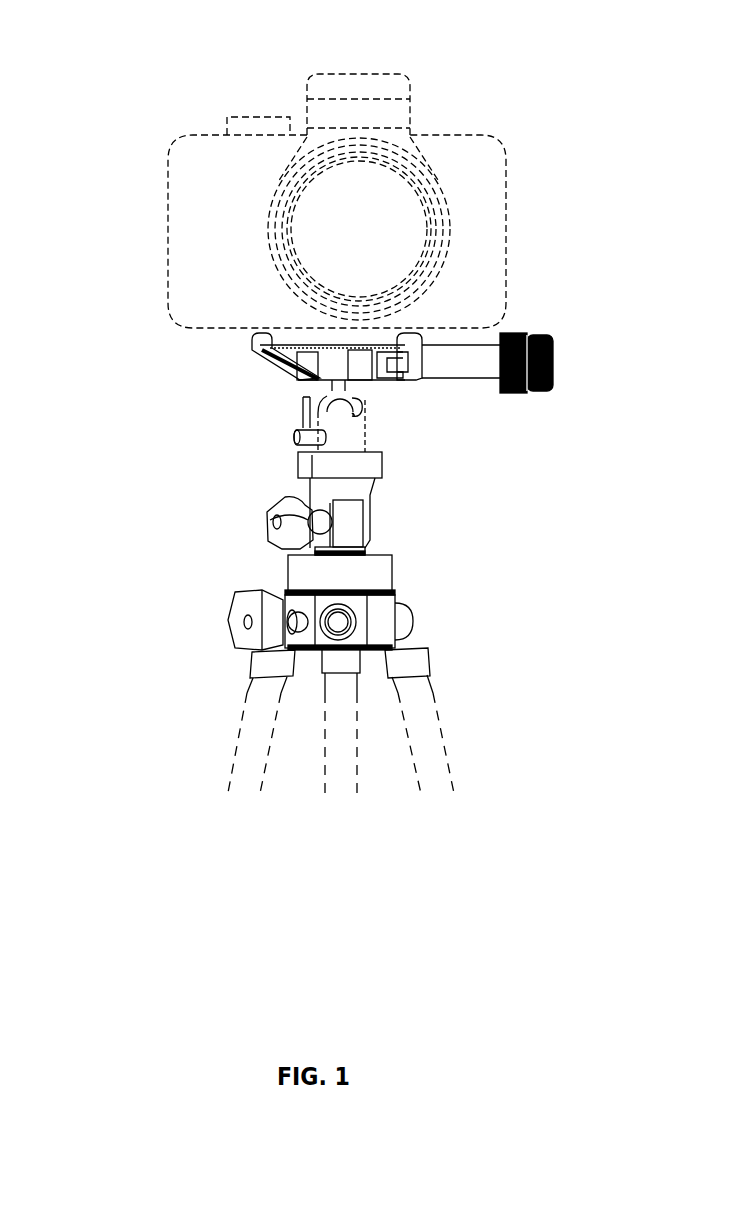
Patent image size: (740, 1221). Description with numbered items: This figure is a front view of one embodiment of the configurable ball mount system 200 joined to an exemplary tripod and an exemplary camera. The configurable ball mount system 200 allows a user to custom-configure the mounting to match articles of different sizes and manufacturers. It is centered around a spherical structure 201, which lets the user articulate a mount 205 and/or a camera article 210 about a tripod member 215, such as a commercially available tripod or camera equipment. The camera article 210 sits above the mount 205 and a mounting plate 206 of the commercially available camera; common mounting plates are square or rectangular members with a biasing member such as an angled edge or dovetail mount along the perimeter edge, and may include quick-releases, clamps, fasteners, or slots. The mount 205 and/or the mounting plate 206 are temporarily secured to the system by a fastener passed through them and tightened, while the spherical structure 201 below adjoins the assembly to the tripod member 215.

The configurable ball mount system 200 is at (155, 79).
The camera article 210 is at (403, 201).
The mount 205 is at (268, 375).
The mounting plate 206 is at (297, 338).
The spherical structure 201 is at (235, 420).
The tripod member 215 is at (255, 589).